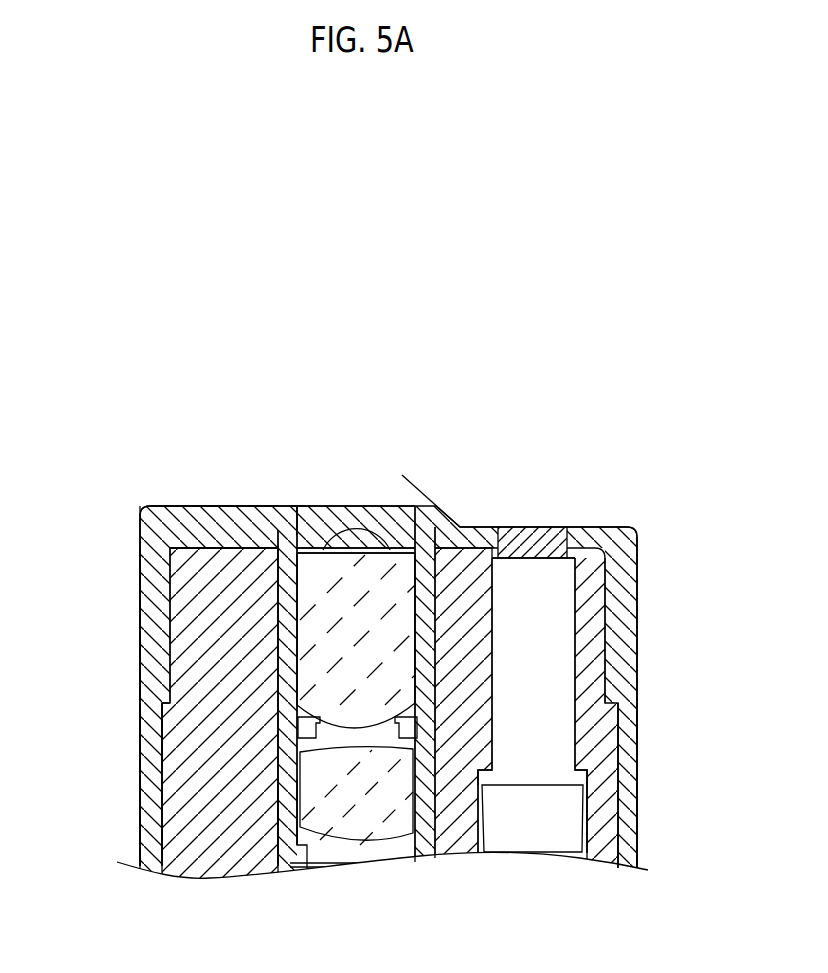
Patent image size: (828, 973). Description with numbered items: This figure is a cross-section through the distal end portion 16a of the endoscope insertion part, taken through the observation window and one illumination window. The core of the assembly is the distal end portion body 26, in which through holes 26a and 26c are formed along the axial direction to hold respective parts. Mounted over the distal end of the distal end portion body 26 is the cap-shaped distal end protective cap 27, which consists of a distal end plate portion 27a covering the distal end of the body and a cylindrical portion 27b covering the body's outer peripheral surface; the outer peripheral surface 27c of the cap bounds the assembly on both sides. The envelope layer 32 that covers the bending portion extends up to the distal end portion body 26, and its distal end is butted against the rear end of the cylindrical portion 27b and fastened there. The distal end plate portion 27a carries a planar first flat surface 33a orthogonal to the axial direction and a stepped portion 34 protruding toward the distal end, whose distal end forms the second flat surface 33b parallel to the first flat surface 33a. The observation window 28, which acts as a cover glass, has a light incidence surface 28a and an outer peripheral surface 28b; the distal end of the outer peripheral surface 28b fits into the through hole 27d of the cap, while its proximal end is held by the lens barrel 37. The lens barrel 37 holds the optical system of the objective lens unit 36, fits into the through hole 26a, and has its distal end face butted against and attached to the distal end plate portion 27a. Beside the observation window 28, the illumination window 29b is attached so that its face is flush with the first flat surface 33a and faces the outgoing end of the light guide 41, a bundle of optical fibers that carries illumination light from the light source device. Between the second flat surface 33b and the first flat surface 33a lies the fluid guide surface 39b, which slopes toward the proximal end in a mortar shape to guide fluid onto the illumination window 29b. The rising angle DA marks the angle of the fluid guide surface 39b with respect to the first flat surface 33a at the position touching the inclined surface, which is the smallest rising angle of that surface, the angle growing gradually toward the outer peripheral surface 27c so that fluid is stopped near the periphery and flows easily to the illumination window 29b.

The distal end portion 16a is at (570, 405).
The distal end portion body 26 is at (216, 770).
The through hole 26a is at (282, 812).
The through hole 26c is at (572, 731).
The distal end protective cap 27 is at (87, 512).
The distal end plate portion 27a is at (213, 540).
The cylindrical portion 27b is at (170, 620).
The outer peripheral surface 27c is at (152, 593).
The through hole 27d is at (300, 507).
The observation window 28 is at (345, 504).
The surface 28a is at (332, 507).
The outer peripheral surface 28b is at (280, 520).
The illumination window 29b is at (523, 545).
The envelope layer 32 is at (632, 840).
The first flat surface 33a is at (577, 527).
The second flat surface 33b is at (207, 507).
The stepped portion 34 is at (242, 507).
The objective lens unit 36 is at (344, 658).
The lens barrel 37 is at (287, 723).
The fluid guide surface 39b is at (450, 530).
The light guide 41 is at (545, 643).
The rising angle DA is at (404, 483).